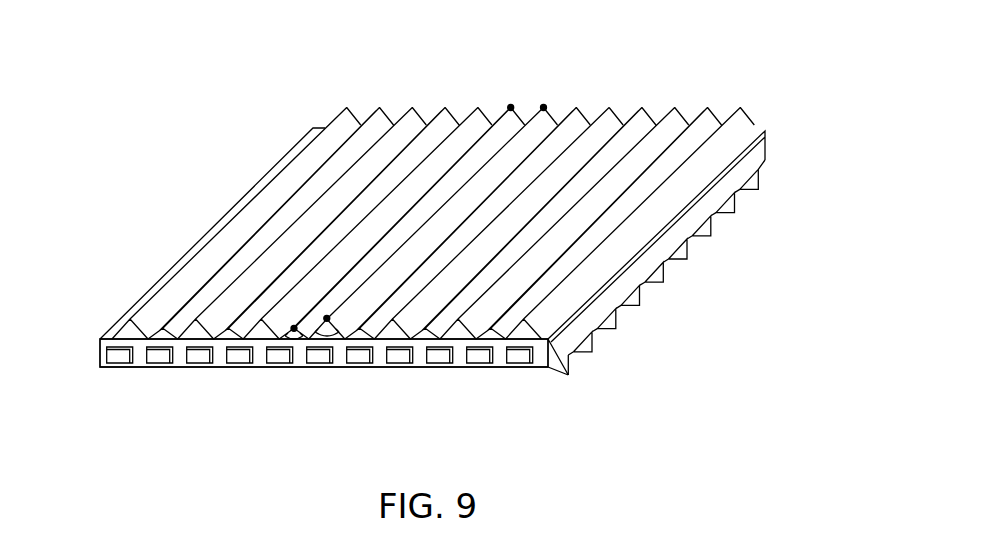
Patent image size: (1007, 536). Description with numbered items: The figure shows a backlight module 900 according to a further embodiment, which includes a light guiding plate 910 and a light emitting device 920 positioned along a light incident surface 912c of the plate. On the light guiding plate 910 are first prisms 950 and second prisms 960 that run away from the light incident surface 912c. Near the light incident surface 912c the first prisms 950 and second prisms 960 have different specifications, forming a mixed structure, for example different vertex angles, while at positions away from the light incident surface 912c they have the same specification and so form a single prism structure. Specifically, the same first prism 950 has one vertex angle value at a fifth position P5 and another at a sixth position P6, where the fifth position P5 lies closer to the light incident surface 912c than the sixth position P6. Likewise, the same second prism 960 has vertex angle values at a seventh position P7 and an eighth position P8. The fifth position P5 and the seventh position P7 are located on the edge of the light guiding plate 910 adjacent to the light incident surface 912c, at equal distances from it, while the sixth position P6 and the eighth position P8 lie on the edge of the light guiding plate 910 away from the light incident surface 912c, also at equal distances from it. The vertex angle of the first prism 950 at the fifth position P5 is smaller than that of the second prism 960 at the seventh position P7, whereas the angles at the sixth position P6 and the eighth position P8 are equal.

The backlight module 900 is at (459, 233).
The light guiding plate 910 is at (459, 205).
The light incident surface 912c is at (380, 358).
The light emitting device 920 is at (237, 364).
The first prism 950 is at (548, 118).
The second prism 960 is at (519, 113).
The fifth position P5 is at (326, 318).
The sixth position P6 is at (544, 106).
The seventh position P7 is at (294, 328).
The eighth position P8 is at (509, 106).